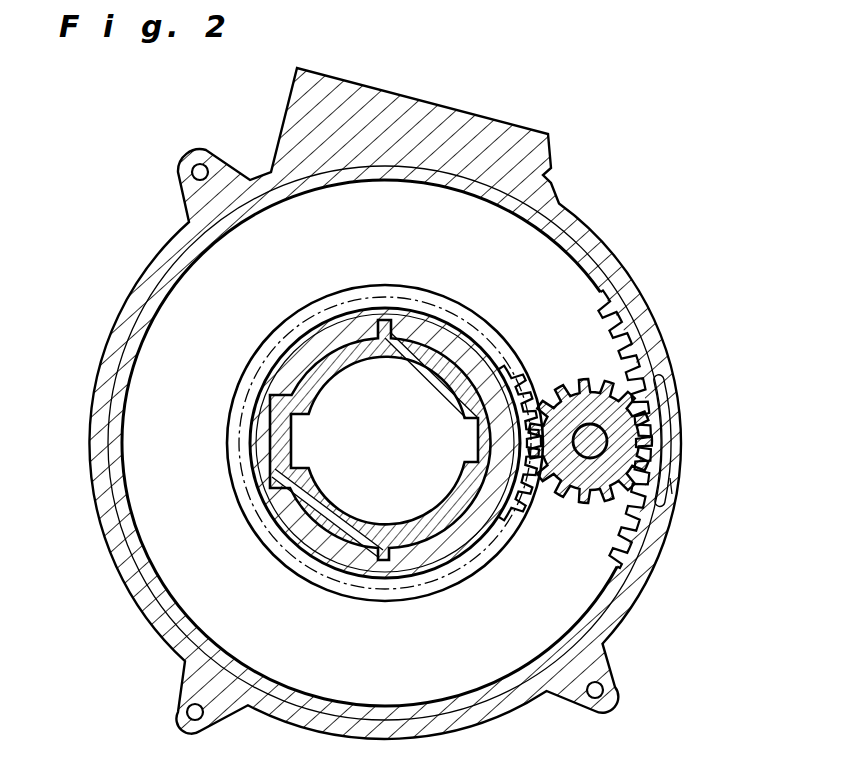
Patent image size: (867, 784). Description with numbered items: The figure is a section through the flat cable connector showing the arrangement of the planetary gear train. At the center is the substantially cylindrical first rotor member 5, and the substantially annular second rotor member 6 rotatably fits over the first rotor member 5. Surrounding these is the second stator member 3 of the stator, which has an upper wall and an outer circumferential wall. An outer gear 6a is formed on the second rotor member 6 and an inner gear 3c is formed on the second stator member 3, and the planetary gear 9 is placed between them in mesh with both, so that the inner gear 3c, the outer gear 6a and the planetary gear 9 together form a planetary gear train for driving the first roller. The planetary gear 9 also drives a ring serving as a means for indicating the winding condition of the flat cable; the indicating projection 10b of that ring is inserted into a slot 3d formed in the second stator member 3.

The second stator member 3 is at (560, 192).
The inner gear 3c is at (608, 556).
The slot 3d is at (678, 485).
The first rotor member 5 is at (317, 361).
The second rotor member 6 is at (273, 375).
The outer gear 6a is at (517, 528).
The planetary gear 9 is at (604, 390).
The indicating projection 10b is at (668, 436).